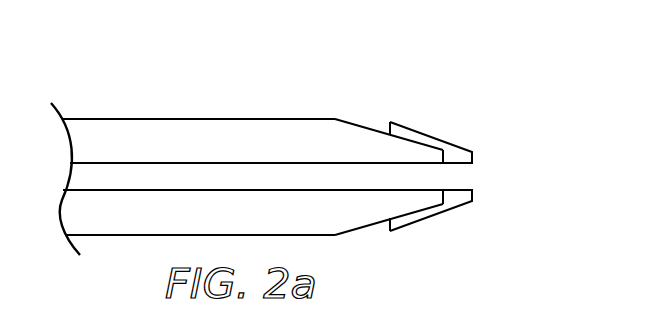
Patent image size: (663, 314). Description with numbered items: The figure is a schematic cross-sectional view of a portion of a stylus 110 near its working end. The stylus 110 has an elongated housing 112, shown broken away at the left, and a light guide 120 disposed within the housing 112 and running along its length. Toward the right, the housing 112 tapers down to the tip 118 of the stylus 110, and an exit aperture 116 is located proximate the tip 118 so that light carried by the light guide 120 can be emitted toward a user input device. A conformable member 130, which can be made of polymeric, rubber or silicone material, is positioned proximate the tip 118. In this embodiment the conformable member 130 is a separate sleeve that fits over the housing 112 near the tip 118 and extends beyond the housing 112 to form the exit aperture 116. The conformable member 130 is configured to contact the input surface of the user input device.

The stylus 110 is at (399, 86).
The housing 112 is at (168, 127).
The exit aperture 116 is at (468, 179).
The tip 118 is at (453, 220).
The light guide 120 is at (283, 178).
The conformable member 130 is at (450, 153).